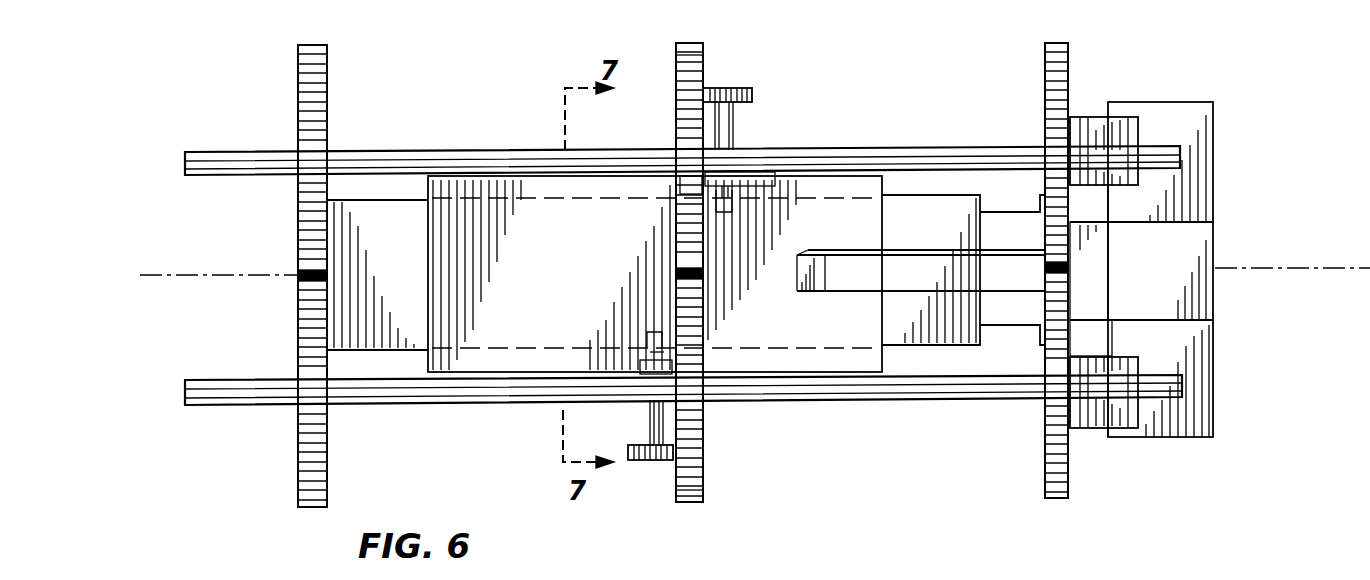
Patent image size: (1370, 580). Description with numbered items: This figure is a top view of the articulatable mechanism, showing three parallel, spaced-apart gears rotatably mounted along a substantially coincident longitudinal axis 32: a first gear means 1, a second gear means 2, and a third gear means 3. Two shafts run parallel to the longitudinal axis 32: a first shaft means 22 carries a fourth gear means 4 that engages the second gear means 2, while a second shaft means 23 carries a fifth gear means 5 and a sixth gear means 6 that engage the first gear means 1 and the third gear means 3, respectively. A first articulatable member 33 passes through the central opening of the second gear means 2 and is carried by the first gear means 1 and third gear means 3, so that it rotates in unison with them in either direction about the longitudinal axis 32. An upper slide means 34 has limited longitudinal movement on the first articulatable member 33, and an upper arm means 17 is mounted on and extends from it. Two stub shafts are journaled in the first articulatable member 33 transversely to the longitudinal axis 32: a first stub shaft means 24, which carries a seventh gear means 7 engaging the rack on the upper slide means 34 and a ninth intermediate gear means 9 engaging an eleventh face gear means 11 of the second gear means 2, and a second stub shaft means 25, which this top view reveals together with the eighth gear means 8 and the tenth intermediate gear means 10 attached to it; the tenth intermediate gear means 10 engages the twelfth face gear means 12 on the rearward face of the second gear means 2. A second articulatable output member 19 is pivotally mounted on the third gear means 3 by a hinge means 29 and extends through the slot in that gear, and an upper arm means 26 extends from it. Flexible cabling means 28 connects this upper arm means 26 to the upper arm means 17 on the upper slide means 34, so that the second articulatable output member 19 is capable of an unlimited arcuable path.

The first gear means 1 is at (299, 440).
The second gear means 2 is at (676, 113).
The third gear means 3 is at (1045, 433).
The fourth gear means 4 is at (703, 443).
The fifth gear means 5 is at (298, 105).
The sixth gear means 6 is at (1045, 87).
The seventh gear means 7 is at (630, 362).
The eighth gear means 8 is at (733, 88).
The ninth intermediate gear means 9 is at (650, 460).
The tenth intermediate gear means 10 is at (748, 176).
The eleventh face gear means 11 is at (676, 492).
The twelfth face gear means 12 is at (703, 50).
The upper arm means 17 is at (797, 283).
The second articulatable output member 19 is at (1180, 238).
The first shaft means 22 is at (405, 405).
The second shaft means 23 is at (446, 149).
The first stub shaft means 24 is at (650, 420).
The second stub shaft means 25 is at (733, 120).
The upper arm means 26 is at (1082, 256).
The flexible cabling means 28 is at (913, 250).
The hinge means 29 is at (1100, 127).
The longitudinal axis 32 is at (235, 275).
The first articulatable member 33 is at (372, 313).
The upper slide means 34 is at (500, 323).